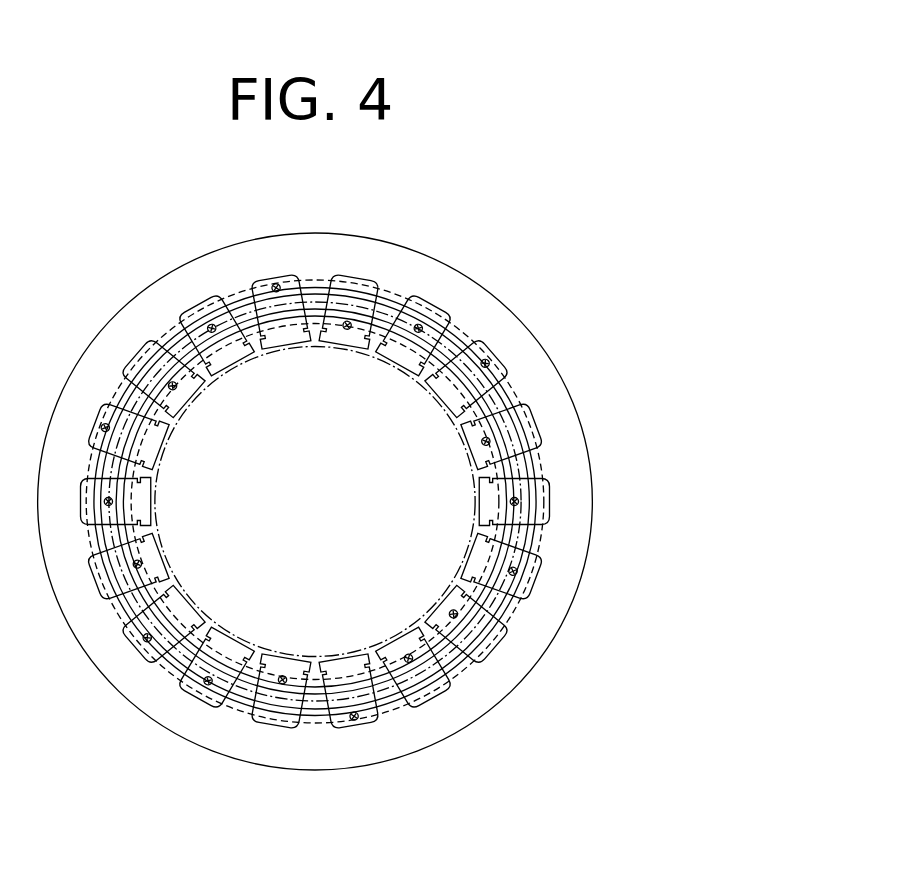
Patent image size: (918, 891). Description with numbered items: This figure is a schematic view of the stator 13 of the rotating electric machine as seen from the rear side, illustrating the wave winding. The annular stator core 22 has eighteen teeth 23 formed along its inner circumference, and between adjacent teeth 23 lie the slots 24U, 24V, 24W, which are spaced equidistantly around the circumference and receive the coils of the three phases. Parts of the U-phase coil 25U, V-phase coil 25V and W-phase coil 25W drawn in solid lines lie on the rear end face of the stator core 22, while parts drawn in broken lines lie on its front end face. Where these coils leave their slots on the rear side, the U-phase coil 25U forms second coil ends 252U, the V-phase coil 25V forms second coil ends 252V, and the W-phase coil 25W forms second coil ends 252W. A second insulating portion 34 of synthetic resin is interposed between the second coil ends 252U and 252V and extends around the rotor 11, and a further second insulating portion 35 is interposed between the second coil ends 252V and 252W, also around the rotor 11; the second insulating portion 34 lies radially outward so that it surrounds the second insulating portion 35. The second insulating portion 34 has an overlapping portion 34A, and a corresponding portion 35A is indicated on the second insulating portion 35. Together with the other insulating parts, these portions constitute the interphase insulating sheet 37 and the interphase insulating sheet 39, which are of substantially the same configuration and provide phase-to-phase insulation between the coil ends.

The rotor 11 is at (309, 656).
The stator 13 is at (485, 221).
The stator core 22 is at (540, 358).
The teeth 23 is at (462, 406).
The slots 24U is at (288, 280).
The slots 24V is at (433, 302).
The slots 24W is at (342, 282).
The U-phase coil 25U is at (358, 330).
The V-phase coil 25V is at (480, 340).
The W-phase coil 25W is at (490, 470).
The second insulating portion 34 is at (95, 493).
The overlapping portion 34A is at (397, 335).
The second insulating portion 35 is at (153, 535).
The inner wall portion 35A is at (496, 445).
The interphase insulating sheet 37 is at (102, 538).
The interphase insulating sheet 39 is at (205, 586).
The second coil ends 252U is at (228, 300).
The second coil ends 252V is at (308, 297).
The second coil ends 252W is at (392, 340).